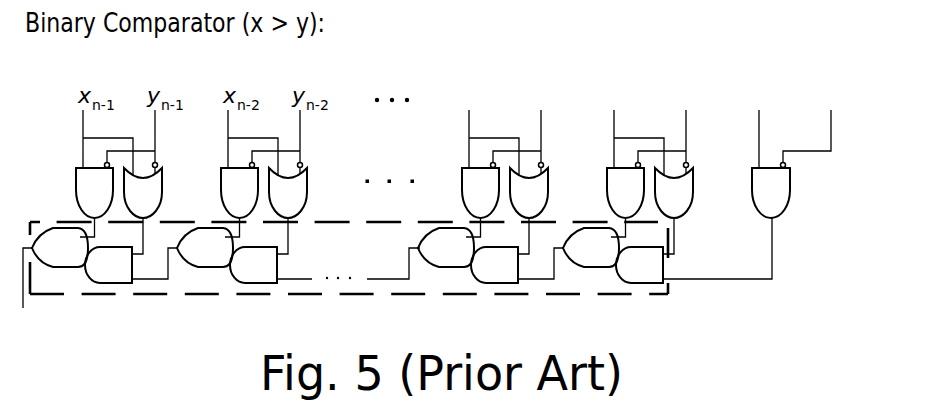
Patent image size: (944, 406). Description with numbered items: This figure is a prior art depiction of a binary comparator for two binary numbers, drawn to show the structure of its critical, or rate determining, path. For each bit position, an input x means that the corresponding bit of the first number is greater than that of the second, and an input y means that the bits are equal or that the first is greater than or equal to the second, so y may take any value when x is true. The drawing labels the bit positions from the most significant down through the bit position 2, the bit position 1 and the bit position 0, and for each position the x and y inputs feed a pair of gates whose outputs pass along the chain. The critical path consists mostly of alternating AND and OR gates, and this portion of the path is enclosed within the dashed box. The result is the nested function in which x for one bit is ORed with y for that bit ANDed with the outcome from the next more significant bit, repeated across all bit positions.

The bit-2 comparator stage (x2, y2 AND/OR gates) 2 is at (490, 183).
The bit-1 comparator stage (x1, y1 AND/OR gates) 1 is at (667, 183).
The bit-0 comparator stage (x0, y0 AND gate) 0 is at (798, 150).